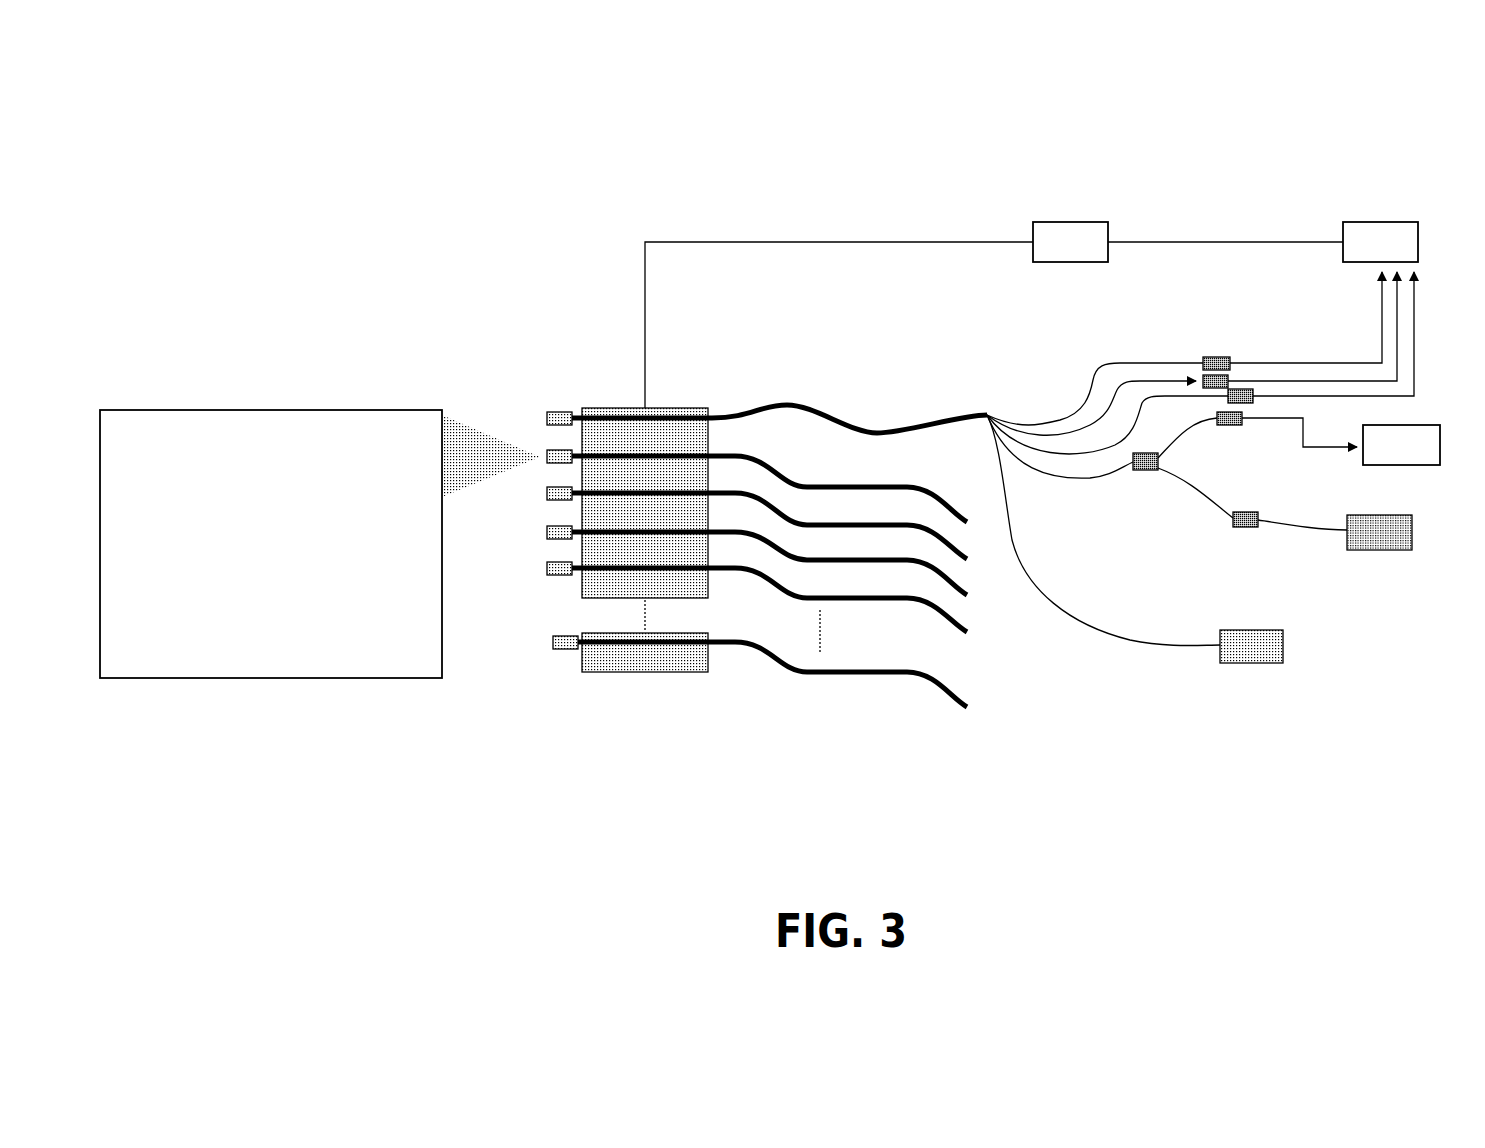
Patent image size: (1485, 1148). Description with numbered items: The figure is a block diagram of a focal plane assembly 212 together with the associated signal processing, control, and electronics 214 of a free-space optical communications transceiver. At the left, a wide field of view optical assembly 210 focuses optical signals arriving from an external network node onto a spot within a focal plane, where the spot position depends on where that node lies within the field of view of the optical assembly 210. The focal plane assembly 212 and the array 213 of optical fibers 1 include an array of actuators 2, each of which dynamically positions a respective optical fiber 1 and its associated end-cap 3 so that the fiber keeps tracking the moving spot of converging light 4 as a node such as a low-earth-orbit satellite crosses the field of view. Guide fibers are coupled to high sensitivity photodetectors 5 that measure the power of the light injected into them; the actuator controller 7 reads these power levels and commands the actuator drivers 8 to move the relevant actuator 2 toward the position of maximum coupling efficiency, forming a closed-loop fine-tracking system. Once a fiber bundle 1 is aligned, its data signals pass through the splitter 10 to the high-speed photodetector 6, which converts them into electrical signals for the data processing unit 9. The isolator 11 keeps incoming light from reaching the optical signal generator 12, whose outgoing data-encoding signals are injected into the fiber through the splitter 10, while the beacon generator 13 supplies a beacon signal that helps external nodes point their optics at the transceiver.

The optical fiber 1 is at (783, 668).
The actuator 2 is at (665, 662).
The end-cap 3 is at (563, 655).
The converging light 4 is at (538, 452).
The high sensitivity photodetector 5 is at (1230, 357).
The high-speed photodetector 6 is at (1245, 440).
The actuator controller 7 is at (1410, 245).
The actuator driver 8 is at (1085, 232).
The data processing unit 9 is at (1410, 455).
The splitter 10 is at (1135, 470).
The isolator 11 is at (1240, 527).
The optical signal generator 12 is at (1372, 550).
The beacon generator 13 is at (1252, 663).
The optical assembly 210 is at (230, 405).
The focal plane assembly 212 is at (548, 320).
The array of optical fibers 213 is at (636, 768).
The signal processing, control, and electronics 214 is at (1058, 138).